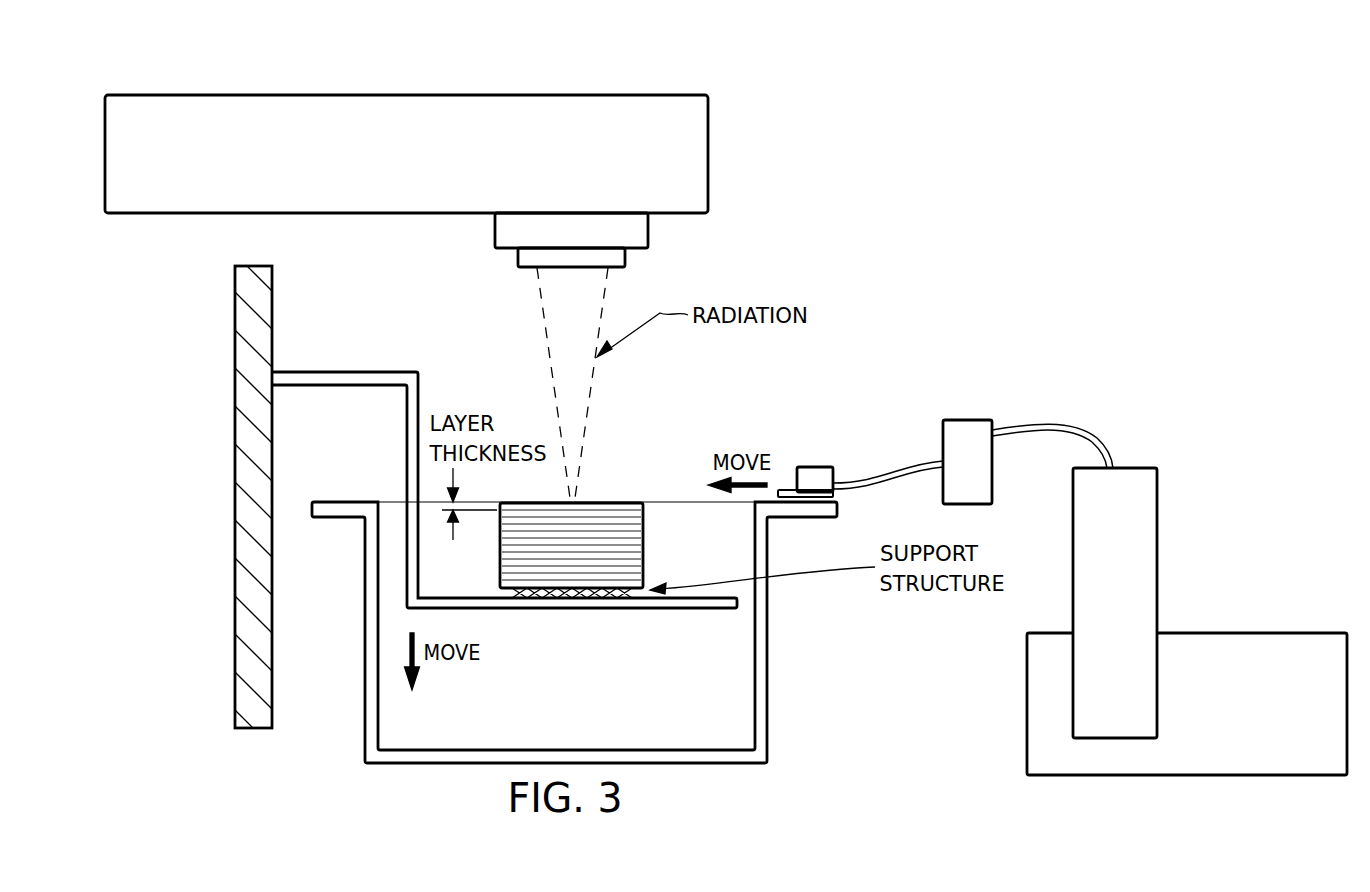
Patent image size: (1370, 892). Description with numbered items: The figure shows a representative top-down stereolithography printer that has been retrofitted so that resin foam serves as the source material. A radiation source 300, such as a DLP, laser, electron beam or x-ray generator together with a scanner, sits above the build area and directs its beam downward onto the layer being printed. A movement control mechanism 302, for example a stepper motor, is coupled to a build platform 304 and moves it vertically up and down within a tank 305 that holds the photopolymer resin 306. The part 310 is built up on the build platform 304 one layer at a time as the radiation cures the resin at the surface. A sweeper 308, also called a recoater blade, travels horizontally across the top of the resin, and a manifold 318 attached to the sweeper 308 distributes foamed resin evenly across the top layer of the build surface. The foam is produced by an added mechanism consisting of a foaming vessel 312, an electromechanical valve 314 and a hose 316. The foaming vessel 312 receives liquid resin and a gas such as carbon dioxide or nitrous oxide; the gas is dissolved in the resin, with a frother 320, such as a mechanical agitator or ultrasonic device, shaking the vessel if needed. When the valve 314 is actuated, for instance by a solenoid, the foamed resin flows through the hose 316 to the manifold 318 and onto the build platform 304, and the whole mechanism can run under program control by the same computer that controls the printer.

The radiation source 300 is at (405, 100).
The movement control mechanism 302 is at (235, 500).
The build platform 304 is at (715, 608).
The tank 305 is at (365, 627).
The photopolymer resin 306 is at (542, 662).
The sweeper 308 is at (815, 465).
The part 310 is at (620, 498).
The foaming vessel 312 is at (1157, 548).
The electromechanical valve 314 is at (968, 418).
The hose 316 is at (1062, 425).
The manifold 318 is at (787, 497).
The frother 320 is at (1187, 765).